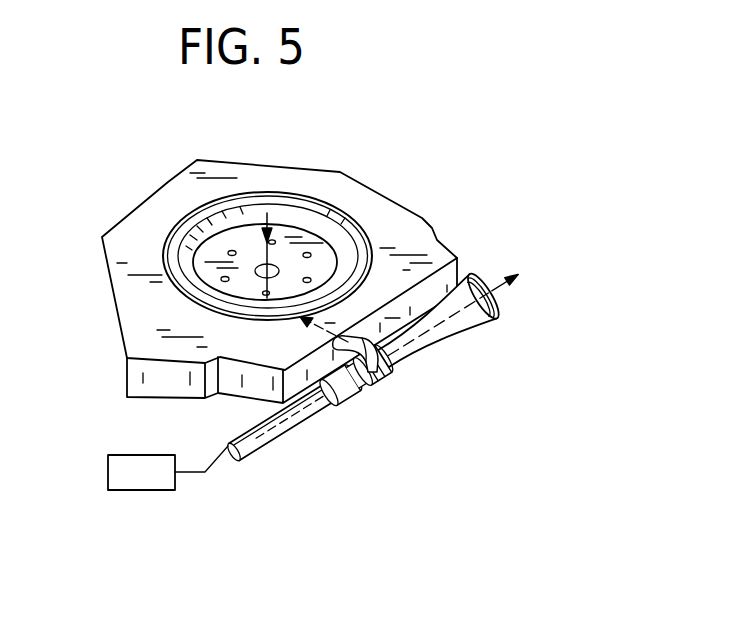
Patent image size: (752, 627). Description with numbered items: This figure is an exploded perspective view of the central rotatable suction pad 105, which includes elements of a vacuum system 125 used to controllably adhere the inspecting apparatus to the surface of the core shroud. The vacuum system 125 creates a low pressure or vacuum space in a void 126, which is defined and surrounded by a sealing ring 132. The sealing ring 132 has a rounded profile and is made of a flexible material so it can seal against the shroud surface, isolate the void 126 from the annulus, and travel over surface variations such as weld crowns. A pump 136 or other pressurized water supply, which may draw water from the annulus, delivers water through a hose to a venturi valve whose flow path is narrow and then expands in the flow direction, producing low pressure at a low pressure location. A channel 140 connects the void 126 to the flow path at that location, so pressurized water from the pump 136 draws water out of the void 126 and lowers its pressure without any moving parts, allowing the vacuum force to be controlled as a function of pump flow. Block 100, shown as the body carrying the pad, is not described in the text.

The substrate holder block 100 is at (407, 228).
The rotatable suction pad 105 is at (258, 203).
The vacuum system 125 is at (488, 426).
The void 126 is at (217, 247).
The sealing ring 132 is at (333, 212).
The pump 136 is at (168, 468).
The channel 140 is at (281, 308).